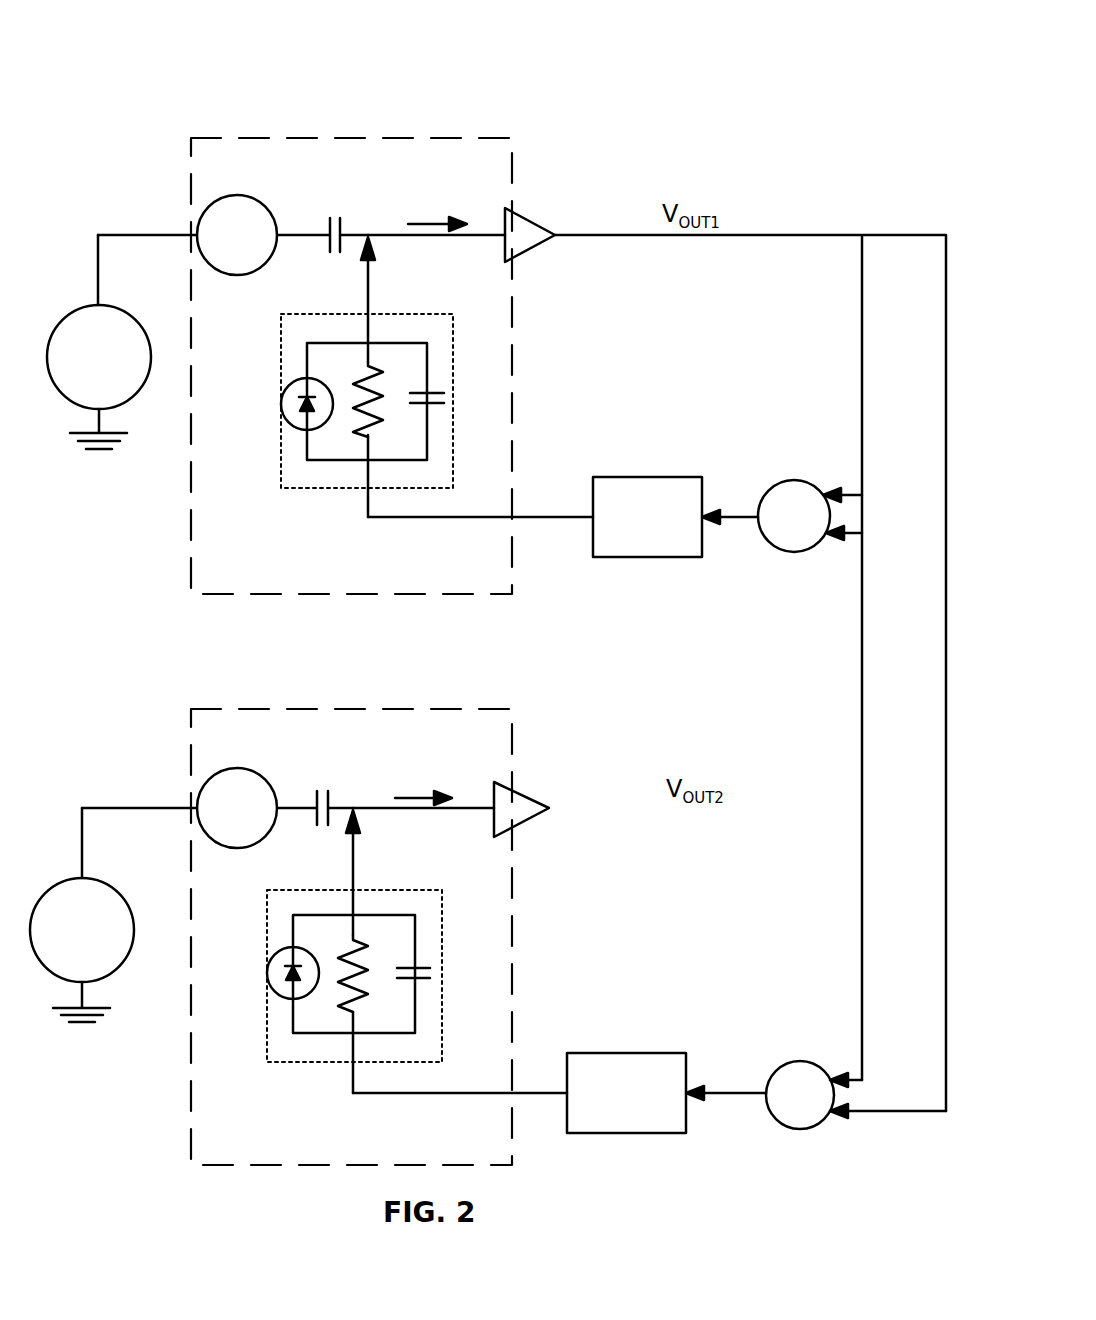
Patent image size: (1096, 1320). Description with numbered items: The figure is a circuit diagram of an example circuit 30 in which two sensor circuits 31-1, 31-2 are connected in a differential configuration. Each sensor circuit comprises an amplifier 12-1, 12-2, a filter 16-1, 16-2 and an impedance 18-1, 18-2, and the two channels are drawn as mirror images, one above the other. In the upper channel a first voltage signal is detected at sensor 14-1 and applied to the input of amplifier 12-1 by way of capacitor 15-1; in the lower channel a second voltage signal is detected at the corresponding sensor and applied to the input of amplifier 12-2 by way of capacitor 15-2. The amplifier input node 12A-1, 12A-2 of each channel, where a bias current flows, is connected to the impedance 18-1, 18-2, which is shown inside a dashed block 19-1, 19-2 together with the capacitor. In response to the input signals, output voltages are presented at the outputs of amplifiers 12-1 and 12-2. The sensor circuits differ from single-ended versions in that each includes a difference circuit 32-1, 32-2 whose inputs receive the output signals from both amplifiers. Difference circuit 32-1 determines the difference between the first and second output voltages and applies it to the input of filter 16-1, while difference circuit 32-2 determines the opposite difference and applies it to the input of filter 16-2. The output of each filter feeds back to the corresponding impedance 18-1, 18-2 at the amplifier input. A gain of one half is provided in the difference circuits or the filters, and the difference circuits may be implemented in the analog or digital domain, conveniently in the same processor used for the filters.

The circuit 30 is at (772, 54).
The sensor circuit 31-1 is at (197, 103).
The sensor circuit 31-2 is at (175, 685).
The first bias circuit 19-1 is at (380, 138).
The second bias circuit 19-2 is at (395, 709).
The sensor 14-1 is at (237, 521).
The capacitor 15-1 is at (340, 218).
The capacitor 15-2 is at (328, 791).
The first amplifier input node 12A-1 is at (436, 196).
The second amplifier input node 12A-2 is at (423, 772).
The amplifier 12-1 is at (536, 192).
The amplifier 12-2 is at (530, 763).
The impedance 18-1 is at (281, 452).
The impedance 18-2 is at (267, 1025).
The filter 16-1 is at (660, 468).
The filter 16-2 is at (641, 1040).
The difference circuit 32-1 is at (782, 513).
The difference circuit 32-2 is at (816, 1087).